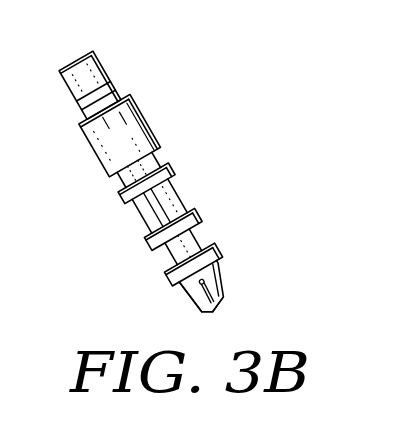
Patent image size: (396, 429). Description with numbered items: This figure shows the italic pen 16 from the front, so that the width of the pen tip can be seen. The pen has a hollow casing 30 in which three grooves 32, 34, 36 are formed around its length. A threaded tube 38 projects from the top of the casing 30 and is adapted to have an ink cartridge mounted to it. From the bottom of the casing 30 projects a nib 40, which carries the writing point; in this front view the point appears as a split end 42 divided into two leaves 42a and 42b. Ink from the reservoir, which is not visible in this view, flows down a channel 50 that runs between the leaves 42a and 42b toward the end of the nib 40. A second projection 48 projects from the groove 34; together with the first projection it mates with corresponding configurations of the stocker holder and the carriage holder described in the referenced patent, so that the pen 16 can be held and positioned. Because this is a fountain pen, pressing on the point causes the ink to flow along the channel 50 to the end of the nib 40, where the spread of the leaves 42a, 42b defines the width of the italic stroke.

The pen 16 is at (152, 110).
The hollow casing 30 is at (88, 145).
The groove 32 is at (159, 167).
The groove 34 is at (144, 215).
The groove 36 is at (201, 230).
The threaded tube 38 is at (101, 65).
The nib 40 is at (229, 274).
The split end 42 is at (224, 305).
The leaf 42a is at (189, 284).
The leaf 42b is at (222, 294).
The second projection 48 is at (180, 188).
The channel 50 is at (209, 303).